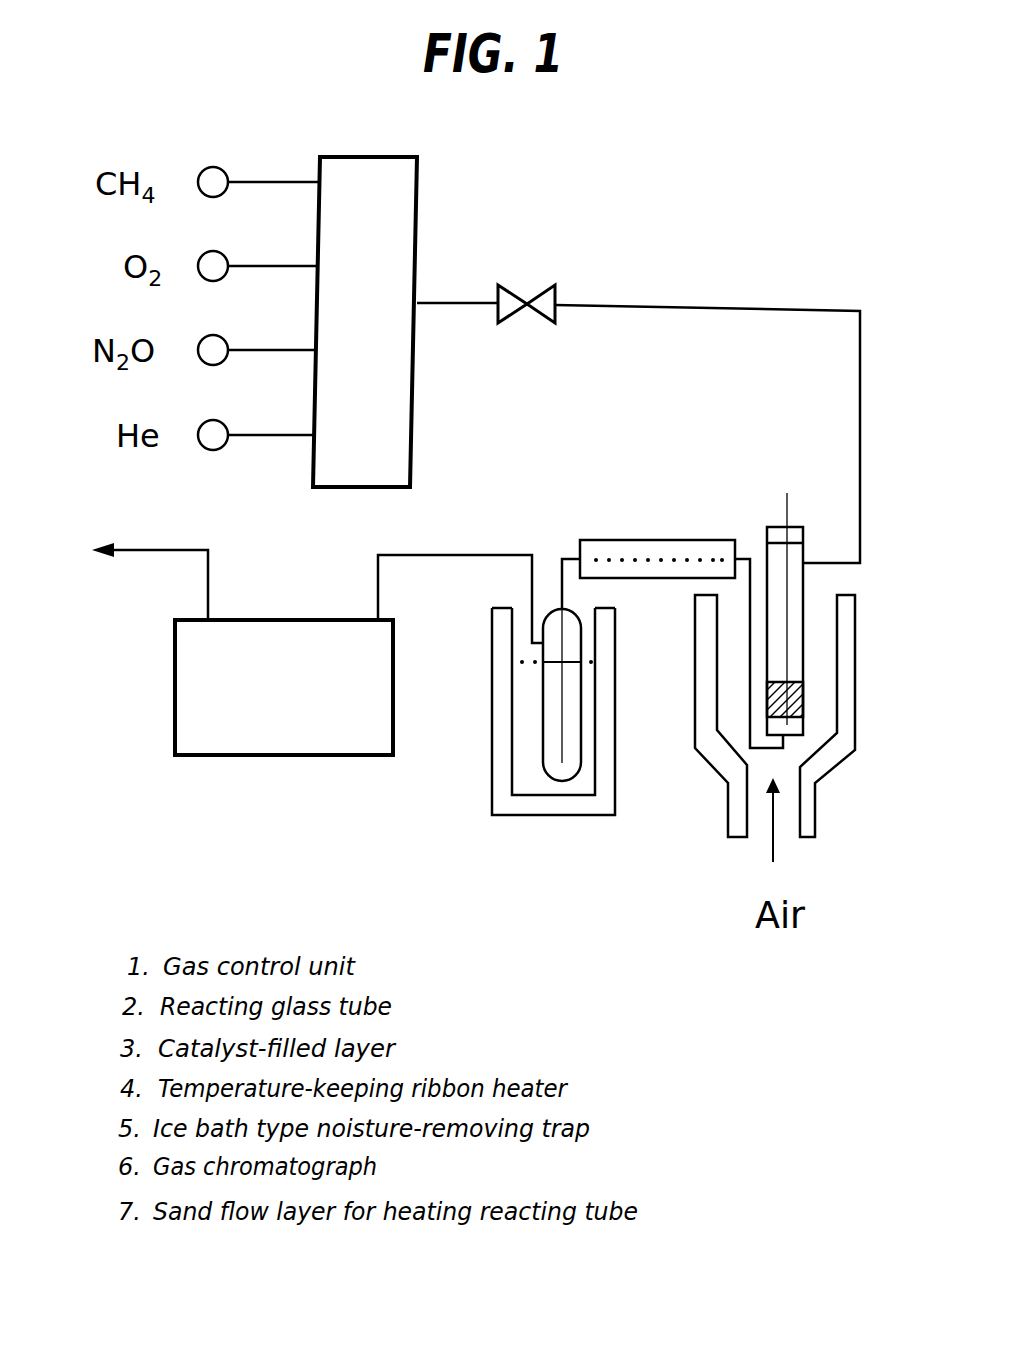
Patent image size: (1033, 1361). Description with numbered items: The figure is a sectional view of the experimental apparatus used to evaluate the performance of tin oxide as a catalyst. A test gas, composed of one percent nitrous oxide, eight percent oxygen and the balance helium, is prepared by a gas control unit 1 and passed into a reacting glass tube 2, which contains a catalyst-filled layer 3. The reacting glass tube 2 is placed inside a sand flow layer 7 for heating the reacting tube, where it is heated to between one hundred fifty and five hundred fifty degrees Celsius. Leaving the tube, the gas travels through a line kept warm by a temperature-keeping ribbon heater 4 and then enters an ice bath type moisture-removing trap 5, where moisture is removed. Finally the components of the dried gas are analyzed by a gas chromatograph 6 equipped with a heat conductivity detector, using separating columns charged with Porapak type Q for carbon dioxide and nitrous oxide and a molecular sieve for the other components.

The gas control unit 1 is at (417, 196).
The reacting glass tube 2 is at (805, 587).
The catalyst-filled layer 3 is at (805, 700).
The temperature-keeping ribbon heater 4 is at (660, 540).
The ice bath type moisture-removing trap 5 is at (565, 815).
The gas chromatograph 6 is at (290, 755).
The sand flow layer 7 is at (835, 770).